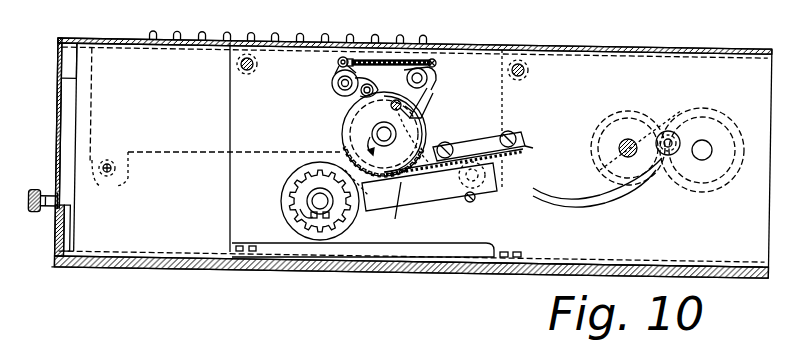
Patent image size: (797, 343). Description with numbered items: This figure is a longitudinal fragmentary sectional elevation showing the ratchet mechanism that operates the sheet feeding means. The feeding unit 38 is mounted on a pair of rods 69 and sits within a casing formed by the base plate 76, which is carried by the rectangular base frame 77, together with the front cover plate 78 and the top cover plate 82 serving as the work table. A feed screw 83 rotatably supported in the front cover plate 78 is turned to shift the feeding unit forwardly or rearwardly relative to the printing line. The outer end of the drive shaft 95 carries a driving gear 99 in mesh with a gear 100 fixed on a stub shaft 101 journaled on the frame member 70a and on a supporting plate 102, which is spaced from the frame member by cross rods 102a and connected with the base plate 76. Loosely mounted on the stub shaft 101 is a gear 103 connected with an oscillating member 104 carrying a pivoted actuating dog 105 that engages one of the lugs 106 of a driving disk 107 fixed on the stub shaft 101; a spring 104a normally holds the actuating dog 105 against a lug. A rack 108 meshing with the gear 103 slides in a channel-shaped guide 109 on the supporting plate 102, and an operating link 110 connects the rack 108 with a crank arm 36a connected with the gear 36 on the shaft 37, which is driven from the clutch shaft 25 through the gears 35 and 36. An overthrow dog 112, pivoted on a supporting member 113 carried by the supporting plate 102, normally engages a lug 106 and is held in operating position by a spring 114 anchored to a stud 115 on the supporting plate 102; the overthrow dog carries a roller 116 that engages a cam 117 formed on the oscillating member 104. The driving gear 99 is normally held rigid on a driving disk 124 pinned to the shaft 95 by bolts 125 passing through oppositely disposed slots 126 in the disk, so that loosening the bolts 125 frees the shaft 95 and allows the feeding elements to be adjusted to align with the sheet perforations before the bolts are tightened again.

The shaft 25 is at (701, 161).
The gear 35 is at (733, 179).
The gear 36 is at (636, 113).
The crank arm 36a is at (674, 129).
The shaft 37 is at (623, 138).
The feeding unit 38 is at (93, 58).
The rods 69 is at (126, 168).
The frame member 70a is at (62, 78).
The base plate 76 is at (549, 257).
The base frame 77 is at (122, 262).
The front cover plate 78 is at (58, 98).
The top cover plate 82 is at (638, 39).
The feed screw 83 is at (42, 213).
The shaft 95 is at (312, 203).
The driving gear 99 is at (291, 193).
The gear 100 is at (345, 160).
The stub shaft 101 is at (382, 133).
The supporting plate 102 is at (230, 193).
The cross rods 102a is at (247, 57).
The gear 103 is at (430, 138).
The oscillating member 104 is at (424, 97).
The spring 104a is at (420, 115).
The actuating dog 105 is at (428, 79).
The lugs 106 is at (380, 82).
The driving disk 107 is at (395, 219).
The rack 108 is at (510, 183).
The channel-shaped guide 109 is at (440, 204).
The operating link 110 is at (558, 190).
The overthrow dog 112 is at (332, 85).
The supporting member 113 is at (338, 91).
The spring 114 is at (386, 59).
The stud 115 is at (434, 59).
The roller 116 is at (371, 60).
The cam 117 is at (364, 144).
The driving disk 124 is at (304, 217).
The bolts 125 is at (306, 168).
The slots 126 is at (310, 185).